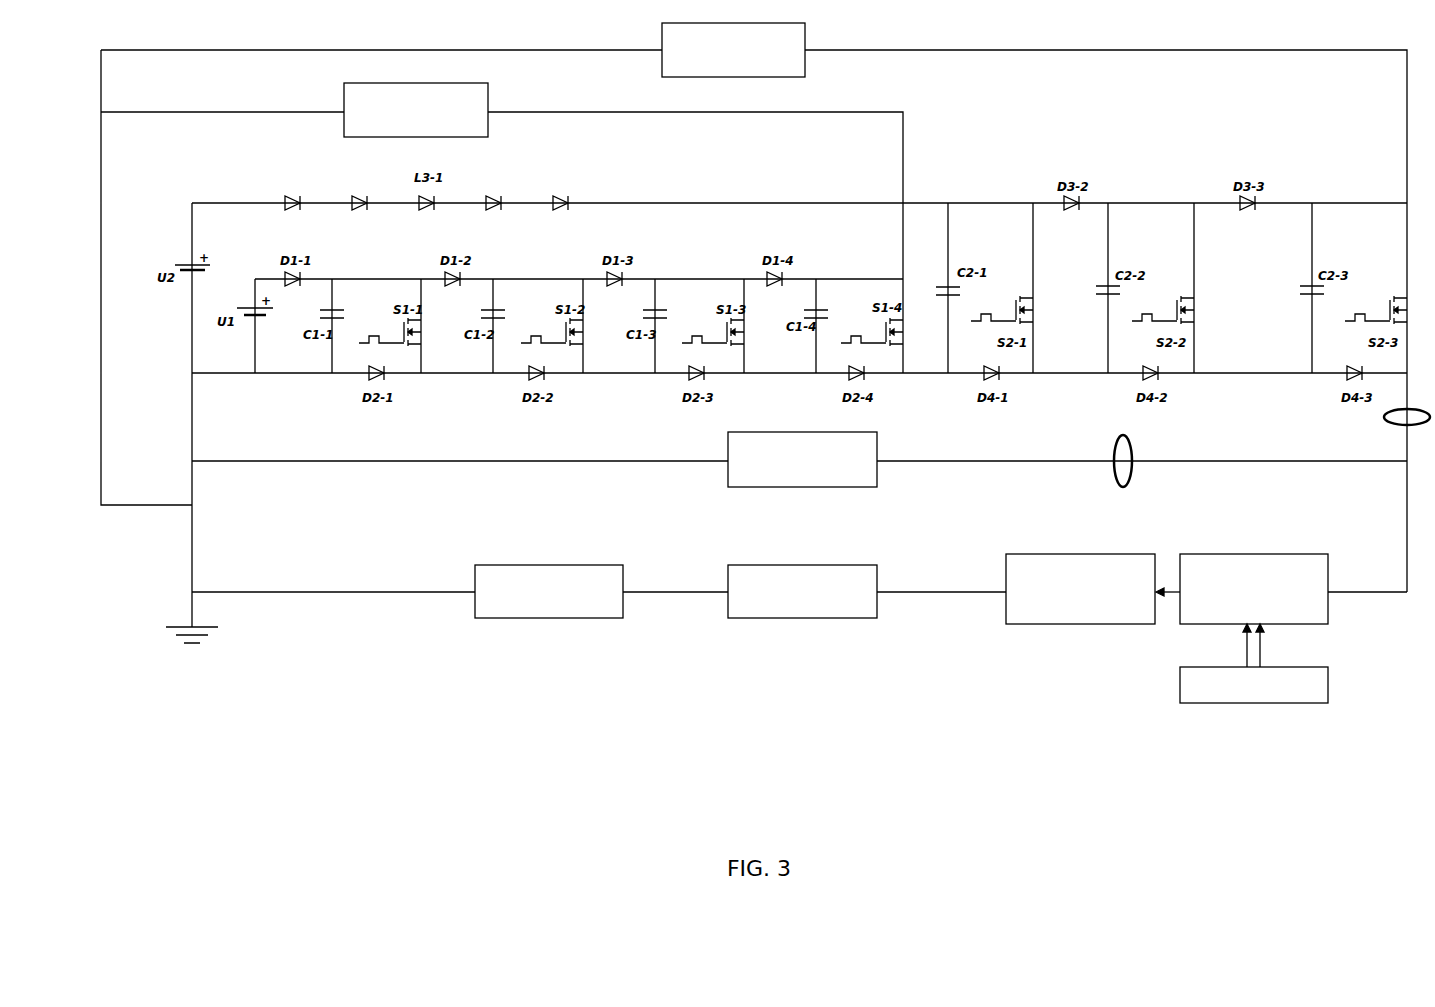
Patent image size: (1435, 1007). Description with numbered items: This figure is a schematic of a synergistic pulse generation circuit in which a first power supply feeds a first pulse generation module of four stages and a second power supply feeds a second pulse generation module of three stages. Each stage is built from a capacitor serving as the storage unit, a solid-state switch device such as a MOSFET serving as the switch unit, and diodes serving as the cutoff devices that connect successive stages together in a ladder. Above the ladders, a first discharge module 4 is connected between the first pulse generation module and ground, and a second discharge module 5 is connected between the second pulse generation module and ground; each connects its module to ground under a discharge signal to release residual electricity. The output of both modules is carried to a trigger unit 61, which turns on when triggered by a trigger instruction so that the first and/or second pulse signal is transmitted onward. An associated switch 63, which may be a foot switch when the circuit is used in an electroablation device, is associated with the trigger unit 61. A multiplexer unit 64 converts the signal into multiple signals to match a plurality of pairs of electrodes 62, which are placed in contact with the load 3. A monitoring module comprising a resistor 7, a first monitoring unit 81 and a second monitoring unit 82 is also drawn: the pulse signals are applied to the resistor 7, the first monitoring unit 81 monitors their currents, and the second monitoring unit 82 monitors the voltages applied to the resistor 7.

The load 3 is at (549, 591).
The first discharge module 4 is at (416, 110).
The second discharge module 5 is at (733, 50).
The resistor 7 is at (802, 459).
The trigger unit 61 is at (1242, 589).
The electrodes 62 is at (802, 591).
The associated switch 63 is at (1253, 663).
The multiplexer unit 64 is at (1080, 589).
The first monitoring unit 81 is at (1412, 407).
The second monitoring unit 82 is at (1133, 446).